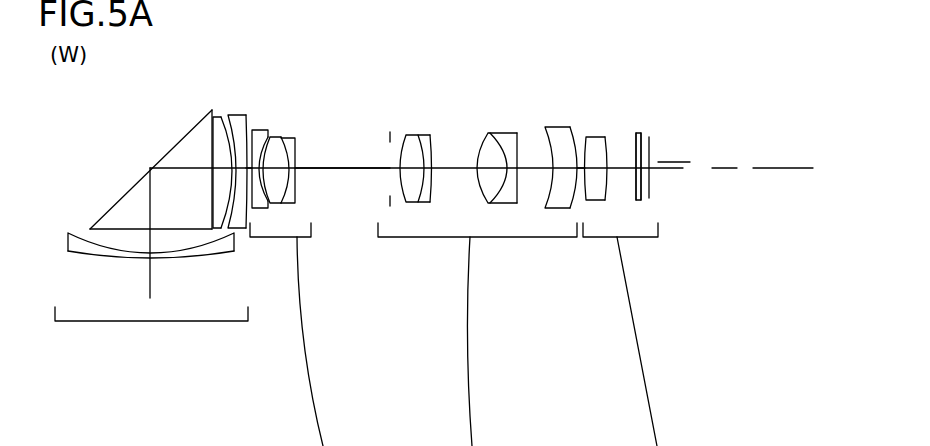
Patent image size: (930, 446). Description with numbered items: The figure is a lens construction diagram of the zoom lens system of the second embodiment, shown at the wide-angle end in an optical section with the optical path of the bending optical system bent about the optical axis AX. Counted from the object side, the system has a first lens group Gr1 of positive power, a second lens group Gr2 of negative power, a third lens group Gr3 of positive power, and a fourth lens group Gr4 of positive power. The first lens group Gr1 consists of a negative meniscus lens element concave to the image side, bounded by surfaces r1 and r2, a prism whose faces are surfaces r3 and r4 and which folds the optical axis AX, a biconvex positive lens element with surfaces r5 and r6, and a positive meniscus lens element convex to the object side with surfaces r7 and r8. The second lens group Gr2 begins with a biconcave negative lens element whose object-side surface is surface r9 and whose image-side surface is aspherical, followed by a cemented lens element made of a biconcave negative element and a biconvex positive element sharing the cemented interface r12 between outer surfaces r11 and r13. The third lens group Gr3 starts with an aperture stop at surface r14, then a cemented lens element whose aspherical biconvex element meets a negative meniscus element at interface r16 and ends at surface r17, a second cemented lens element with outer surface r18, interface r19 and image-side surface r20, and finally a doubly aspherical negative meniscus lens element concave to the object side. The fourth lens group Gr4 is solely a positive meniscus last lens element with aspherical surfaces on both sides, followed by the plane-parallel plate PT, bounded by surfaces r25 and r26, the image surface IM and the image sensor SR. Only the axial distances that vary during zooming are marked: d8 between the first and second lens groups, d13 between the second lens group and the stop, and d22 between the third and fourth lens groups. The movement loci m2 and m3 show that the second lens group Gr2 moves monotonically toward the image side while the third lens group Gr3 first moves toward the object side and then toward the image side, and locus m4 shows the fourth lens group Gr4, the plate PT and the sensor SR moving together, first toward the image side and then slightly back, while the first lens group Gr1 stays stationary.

The first surface r1 is at (103, 255).
The second surface r2 is at (122, 252).
The third surface r3 is at (112, 228).
The fourth surface r4 is at (212, 143).
The fifth surface r5 is at (213, 128).
The sixth surface r6 is at (220, 116).
The seventh surface r7 is at (229, 114).
The eighth surface r8 is at (243, 114).
The ninth surface r9 is at (252, 130).
The eleventh surface r11 is at (272, 140).
The twelfth surface r12 is at (285, 140).
The thirteenth surface r13 is at (295, 147).
The fourteenth surface (aperture stop) r14 is at (390, 200).
The sixteenth surface r16 is at (414, 137).
The seventeenth surface r17 is at (428, 138).
The eighteenth surface r18 is at (487, 138).
The nineteenth surface r19 is at (495, 140).
The twentieth surface r20 is at (513, 134).
The twenty-fifth surface r25 is at (635, 133).
The twenty-sixth surface r26 is at (643, 133).
The eighth axial distance d8 is at (250, 208).
The thirteenth axial distance d13 is at (342, 158).
The twenty-second axial distance d22 is at (575, 178).
The first lens group Gr1 is at (151, 327).
The second lens group Gr2 is at (280, 243).
The third lens group Gr3 is at (477, 243).
The fourth lens group Gr4 is at (604, 200).
The plane-parallel plate PT is at (642, 199).
The image surface IM is at (650, 137).
The image sensor SR is at (674, 153).
The optical axis AX is at (755, 169).
The movement locus of second lens group m2 is at (313, 375).
The movement locus of third lens group m3 is at (470, 367).
The movement locus of fourth lens group m4 is at (638, 362).